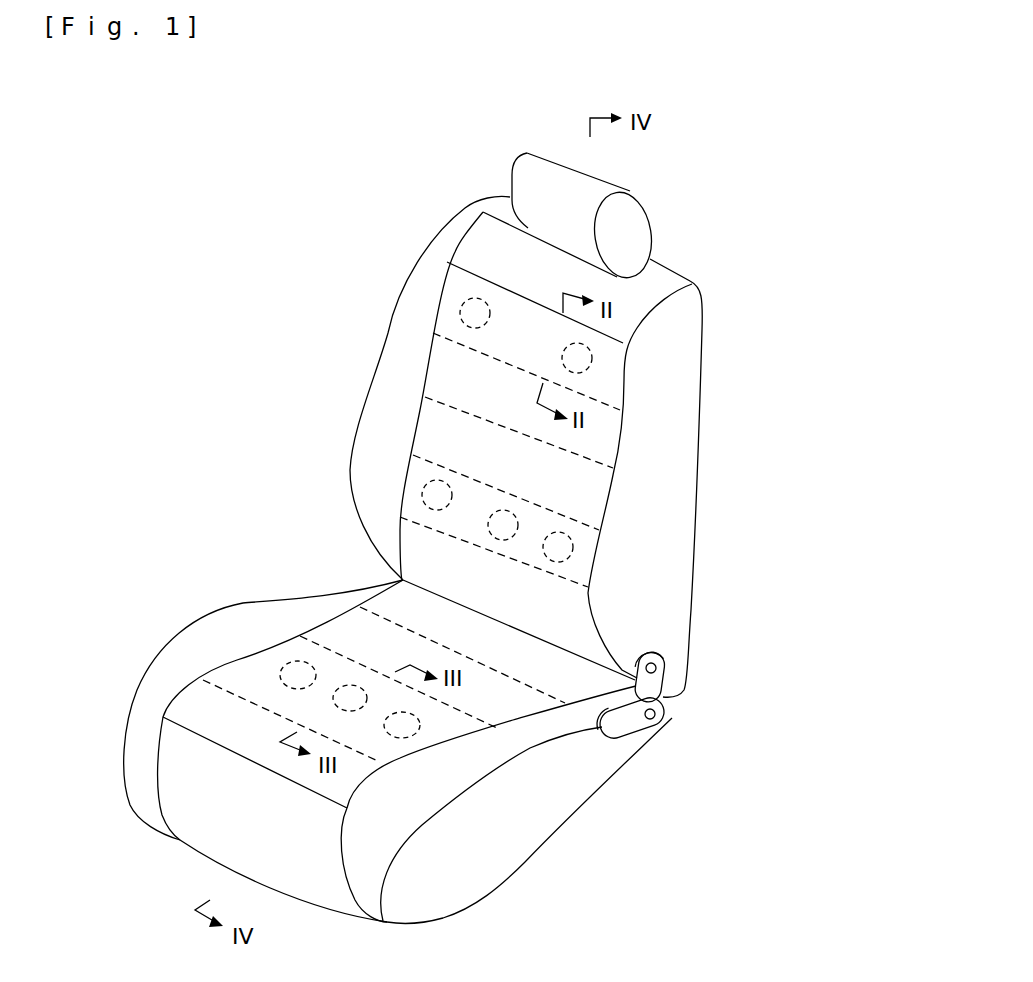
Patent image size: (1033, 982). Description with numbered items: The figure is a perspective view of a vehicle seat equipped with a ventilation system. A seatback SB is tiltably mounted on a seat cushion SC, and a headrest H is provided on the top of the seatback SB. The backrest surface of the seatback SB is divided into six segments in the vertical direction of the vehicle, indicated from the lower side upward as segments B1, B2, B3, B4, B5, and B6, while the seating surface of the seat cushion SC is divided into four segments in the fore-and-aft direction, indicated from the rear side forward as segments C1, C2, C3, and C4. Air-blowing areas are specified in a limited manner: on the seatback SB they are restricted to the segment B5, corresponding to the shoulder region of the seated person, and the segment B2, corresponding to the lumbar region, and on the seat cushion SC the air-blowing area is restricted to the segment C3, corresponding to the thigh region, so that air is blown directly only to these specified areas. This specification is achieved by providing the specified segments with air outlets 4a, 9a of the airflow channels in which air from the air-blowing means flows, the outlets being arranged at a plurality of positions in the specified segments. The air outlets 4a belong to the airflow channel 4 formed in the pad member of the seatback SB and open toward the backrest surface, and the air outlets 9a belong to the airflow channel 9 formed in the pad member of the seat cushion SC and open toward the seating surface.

The headrest H is at (640, 222).
The seatback SB is at (705, 385).
The seat cushion SC is at (245, 602).
The segment B1 is at (473, 584).
The segment B2 is at (485, 530).
The segment B3 is at (503, 463).
The segment B4 is at (518, 410).
The segment B5 is at (540, 350).
The segment B6 is at (553, 281).
The segment C1 is at (462, 630).
The segment C2 is at (394, 652).
The segment C3 is at (326, 718).
The segment C4 is at (247, 731).
The air outlet 4a is at (622, 456).
The airflow channel 4 is at (590, 365).
The air outlet 9a is at (451, 792).
The airflow channel 9 is at (407, 727).